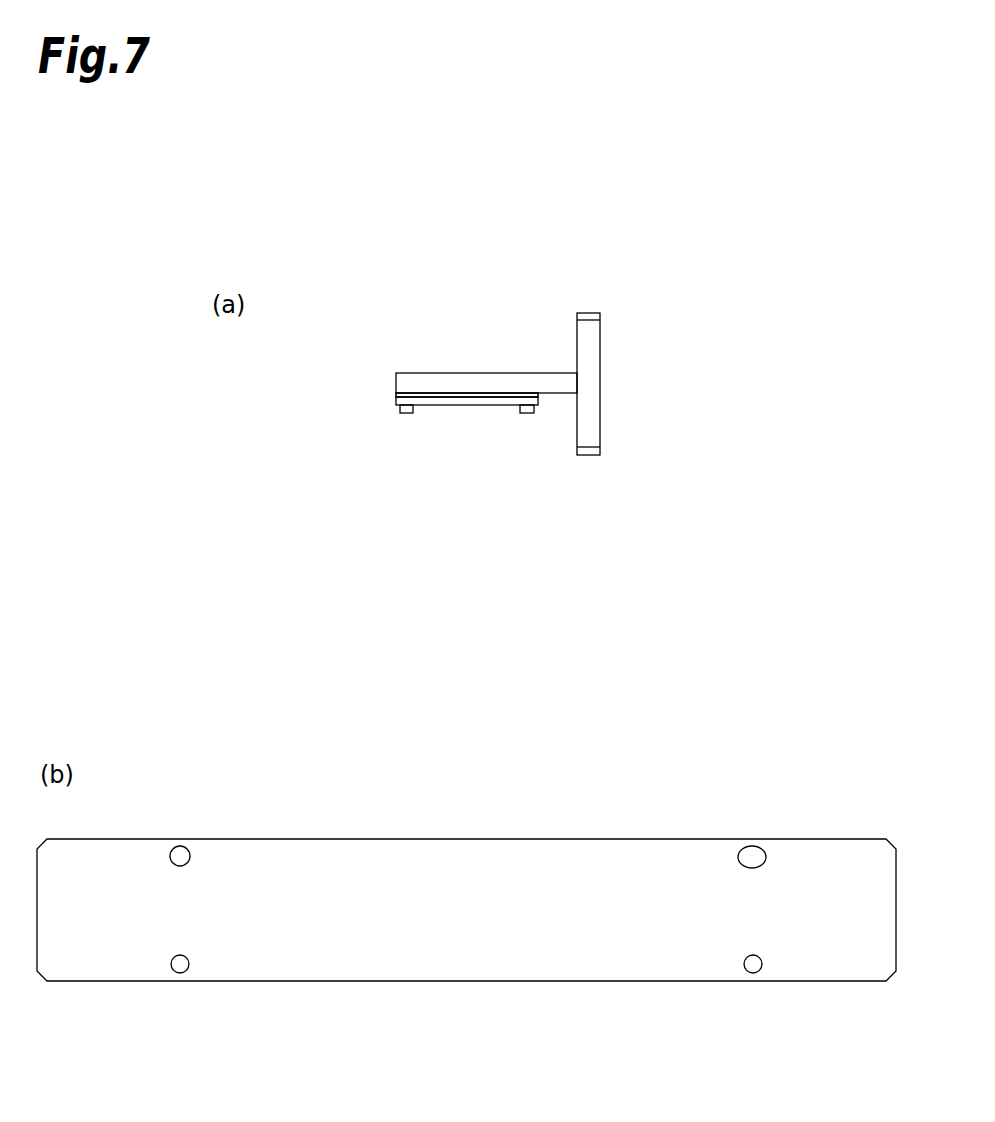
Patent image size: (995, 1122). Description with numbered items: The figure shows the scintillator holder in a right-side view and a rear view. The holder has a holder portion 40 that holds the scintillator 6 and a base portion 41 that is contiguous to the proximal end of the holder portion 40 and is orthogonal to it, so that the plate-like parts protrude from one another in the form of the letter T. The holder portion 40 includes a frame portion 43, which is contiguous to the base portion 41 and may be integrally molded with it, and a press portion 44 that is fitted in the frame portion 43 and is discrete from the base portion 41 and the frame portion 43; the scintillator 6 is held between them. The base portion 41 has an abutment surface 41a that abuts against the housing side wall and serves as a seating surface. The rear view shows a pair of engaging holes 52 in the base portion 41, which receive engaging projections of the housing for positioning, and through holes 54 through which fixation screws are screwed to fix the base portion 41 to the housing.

The scintillator 6 is at (445, 398).
The holder portion 40 is at (422, 405).
The base portion 41 is at (601, 348).
The abutment surface 41a is at (576, 423).
The frame portion 43 is at (395, 382).
The press portion 44 is at (395, 398).
The engaging holes 52 is at (177, 855).
The through holes 54 is at (177, 965).